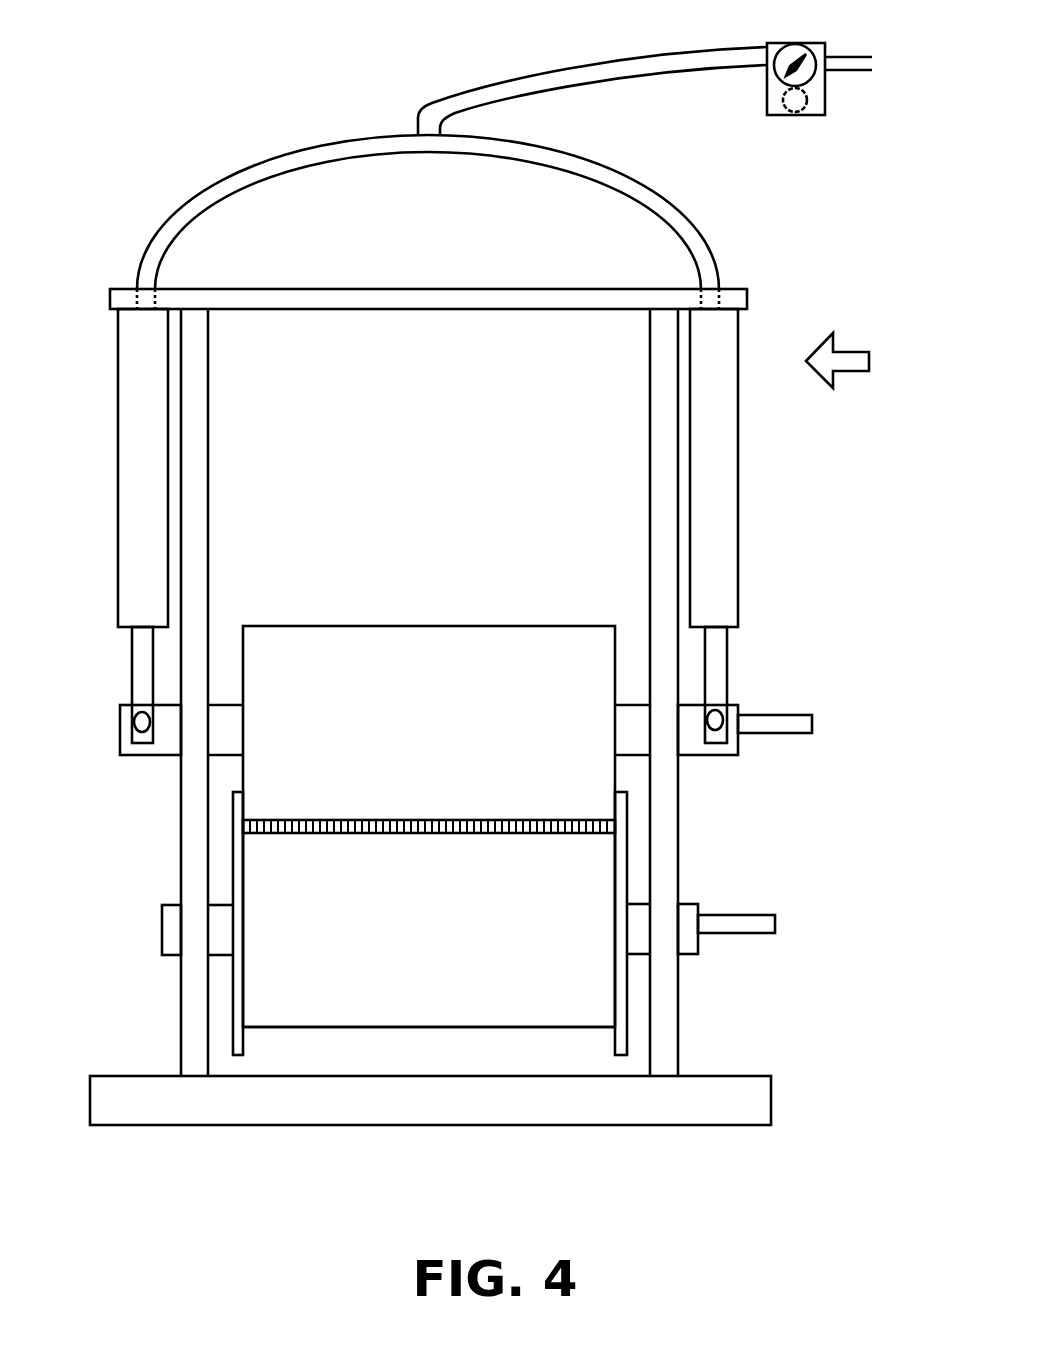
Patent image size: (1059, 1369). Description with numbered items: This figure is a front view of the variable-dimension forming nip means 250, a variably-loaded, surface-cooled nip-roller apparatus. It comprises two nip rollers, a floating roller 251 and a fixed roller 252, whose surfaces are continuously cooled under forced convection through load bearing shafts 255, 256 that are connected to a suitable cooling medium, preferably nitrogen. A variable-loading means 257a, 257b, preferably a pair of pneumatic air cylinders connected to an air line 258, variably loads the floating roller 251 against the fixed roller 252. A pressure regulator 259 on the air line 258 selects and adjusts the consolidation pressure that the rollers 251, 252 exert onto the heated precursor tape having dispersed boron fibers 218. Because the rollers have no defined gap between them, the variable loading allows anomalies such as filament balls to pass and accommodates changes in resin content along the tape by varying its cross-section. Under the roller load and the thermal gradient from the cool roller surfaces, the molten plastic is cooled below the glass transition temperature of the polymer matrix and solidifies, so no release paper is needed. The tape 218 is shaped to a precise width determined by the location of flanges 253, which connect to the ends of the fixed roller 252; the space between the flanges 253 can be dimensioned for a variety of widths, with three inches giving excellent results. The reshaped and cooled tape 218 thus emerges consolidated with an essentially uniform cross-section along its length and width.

The heated precursor tape having dispersed boron fibers 218 is at (495, 835).
The variable-dimension forming nip means 250 is at (864, 360).
The floating roller 251 is at (370, 625).
The fixed roller 252 is at (394, 1027).
The flanges 253 is at (232, 858).
The load bearing shaft 255 is at (812, 720).
The load bearing shaft 256 is at (775, 924).
The variable-loading means 257a is at (137, 532).
The variable-loading means 257b is at (710, 528).
The air line 258 is at (150, 248).
The pressure regulator 259 is at (796, 116).